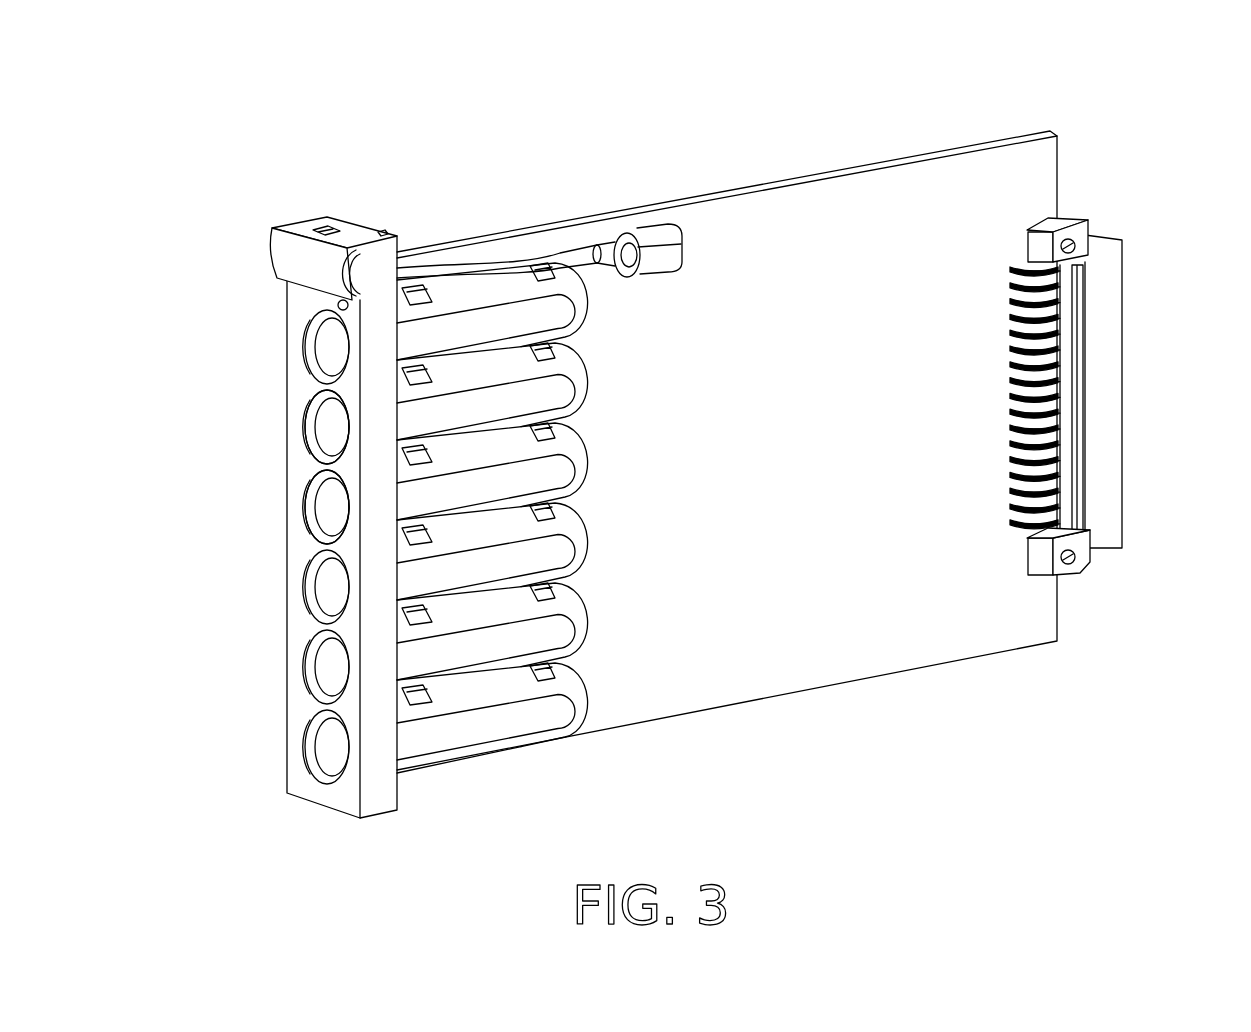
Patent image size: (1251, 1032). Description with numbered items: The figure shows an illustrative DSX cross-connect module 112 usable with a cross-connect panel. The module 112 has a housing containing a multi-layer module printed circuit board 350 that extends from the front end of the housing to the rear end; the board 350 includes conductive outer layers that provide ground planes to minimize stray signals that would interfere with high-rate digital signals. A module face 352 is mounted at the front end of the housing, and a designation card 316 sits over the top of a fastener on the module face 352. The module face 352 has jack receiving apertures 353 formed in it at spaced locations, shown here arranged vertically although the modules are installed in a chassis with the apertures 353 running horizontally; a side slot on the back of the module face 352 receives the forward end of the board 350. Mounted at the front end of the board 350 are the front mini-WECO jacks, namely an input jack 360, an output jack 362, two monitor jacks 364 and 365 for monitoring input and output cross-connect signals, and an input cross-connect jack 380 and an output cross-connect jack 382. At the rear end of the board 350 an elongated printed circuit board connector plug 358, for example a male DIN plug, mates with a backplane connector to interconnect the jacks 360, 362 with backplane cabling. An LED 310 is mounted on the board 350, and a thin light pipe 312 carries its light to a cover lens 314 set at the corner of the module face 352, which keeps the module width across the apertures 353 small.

The cross-connect module 112 is at (727, 399).
The LED 310 is at (650, 232).
The light pipe 312 is at (478, 268).
The cover lens 314 is at (337, 308).
The designation card 316 is at (292, 251).
The module printed circuit board 350 is at (897, 351).
The module face 352 is at (323, 793).
The jack receiving apertures 353 is at (333, 508).
The printed circuit board connector plug 358 is at (1110, 290).
The input jack 360 is at (565, 444).
The output jack 362 is at (565, 524).
The monitor jack 364 is at (565, 287).
The monitor jack 365 is at (565, 683).
The input cross-connect jack 380 is at (565, 364).
The output cross-connect jack 382 is at (565, 604).